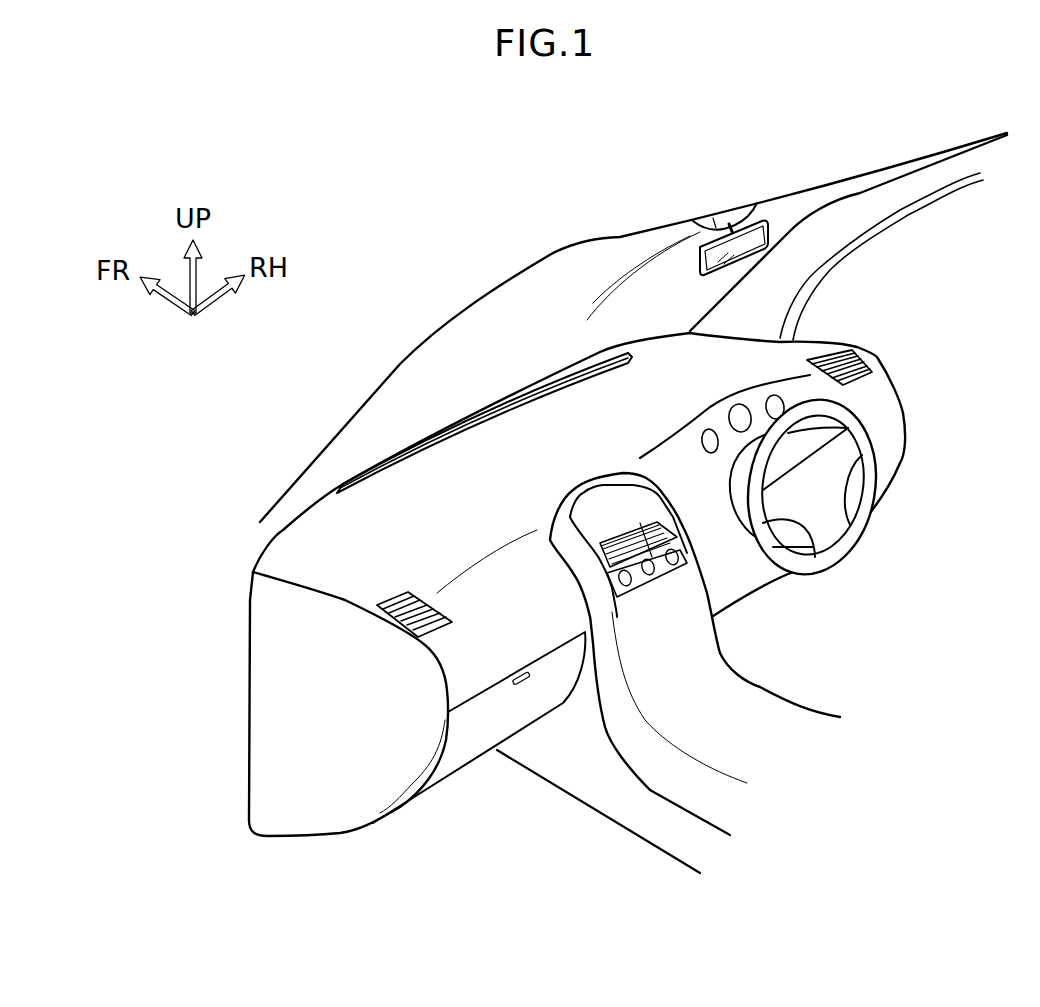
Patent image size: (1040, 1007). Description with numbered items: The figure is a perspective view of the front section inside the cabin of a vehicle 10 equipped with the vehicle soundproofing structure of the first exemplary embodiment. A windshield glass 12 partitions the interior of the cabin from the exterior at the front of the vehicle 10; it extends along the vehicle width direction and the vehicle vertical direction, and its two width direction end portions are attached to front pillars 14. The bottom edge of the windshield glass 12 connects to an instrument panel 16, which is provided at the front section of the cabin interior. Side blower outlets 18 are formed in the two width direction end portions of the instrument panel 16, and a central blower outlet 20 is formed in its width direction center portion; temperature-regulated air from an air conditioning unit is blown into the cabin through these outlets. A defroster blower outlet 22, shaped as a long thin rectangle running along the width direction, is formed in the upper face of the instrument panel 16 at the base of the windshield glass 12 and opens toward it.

The vehicle 10 is at (543, 238).
The windshield glass 12 is at (446, 322).
The front pillar 14 is at (833, 231).
The instrument panel 16 is at (347, 540).
The side blower outlet 18 is at (400, 603).
The central blower outlet 20 is at (685, 531).
The defroster blower outlet 22 is at (418, 440).